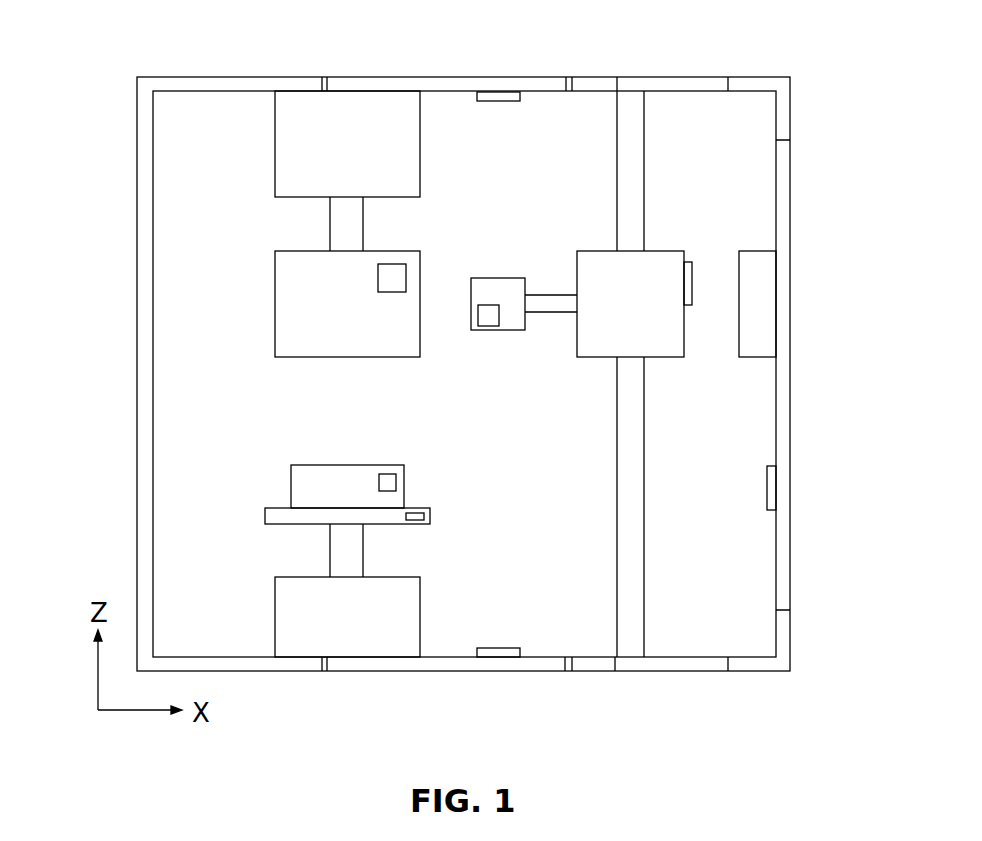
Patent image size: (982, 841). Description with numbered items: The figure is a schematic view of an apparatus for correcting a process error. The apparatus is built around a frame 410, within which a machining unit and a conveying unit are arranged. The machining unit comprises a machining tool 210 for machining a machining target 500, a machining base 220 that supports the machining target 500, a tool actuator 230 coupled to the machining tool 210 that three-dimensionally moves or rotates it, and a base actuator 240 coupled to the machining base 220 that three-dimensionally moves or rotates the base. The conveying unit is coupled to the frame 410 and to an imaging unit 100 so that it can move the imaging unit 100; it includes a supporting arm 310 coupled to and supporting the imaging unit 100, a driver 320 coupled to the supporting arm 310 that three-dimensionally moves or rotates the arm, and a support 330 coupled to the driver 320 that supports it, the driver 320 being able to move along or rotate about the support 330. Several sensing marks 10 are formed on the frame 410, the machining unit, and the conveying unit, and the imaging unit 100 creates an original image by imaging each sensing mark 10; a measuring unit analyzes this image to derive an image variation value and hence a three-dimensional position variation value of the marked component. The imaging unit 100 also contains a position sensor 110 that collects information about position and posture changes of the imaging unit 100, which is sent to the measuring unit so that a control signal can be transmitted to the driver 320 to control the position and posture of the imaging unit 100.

The sensing mark 10 is at (497, 96).
The imaging unit 100 is at (498, 292).
The position sensor 110 is at (488, 314).
The machining tool 210 is at (310, 312).
The machining base 220 is at (290, 518).
The tool actuator 230 is at (290, 152).
The base actuator 240 is at (286, 628).
The supporting arm 310 is at (555, 297).
The driver 320 is at (658, 340).
The support 330 is at (630, 555).
The frame 410 is at (201, 83).
The machining target 500 is at (310, 480).